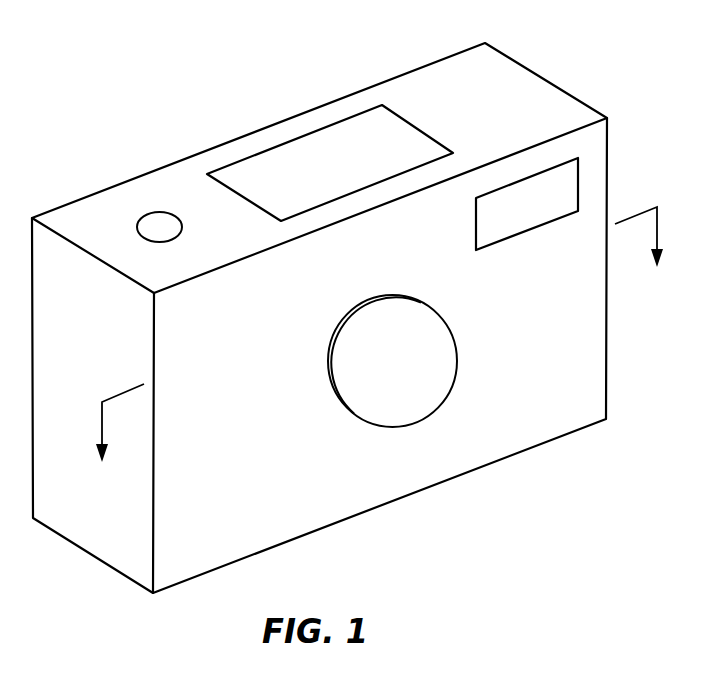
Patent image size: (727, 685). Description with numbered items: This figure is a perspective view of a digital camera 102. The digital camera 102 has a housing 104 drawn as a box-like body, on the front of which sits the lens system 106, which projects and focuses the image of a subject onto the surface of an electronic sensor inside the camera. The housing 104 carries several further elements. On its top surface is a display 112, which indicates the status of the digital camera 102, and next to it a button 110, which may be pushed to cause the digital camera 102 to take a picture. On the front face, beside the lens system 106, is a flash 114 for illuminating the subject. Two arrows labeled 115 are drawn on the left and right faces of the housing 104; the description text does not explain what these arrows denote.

The camera 102 is at (353, 307).
The housing 104 is at (533, 72).
The lens 106 is at (333, 400).
The shutter button 110 is at (137, 218).
The display screen 112 is at (277, 146).
The viewfinder window 114 is at (578, 177).
The top-to-bottom orientation arrows 115 is at (377, 352).